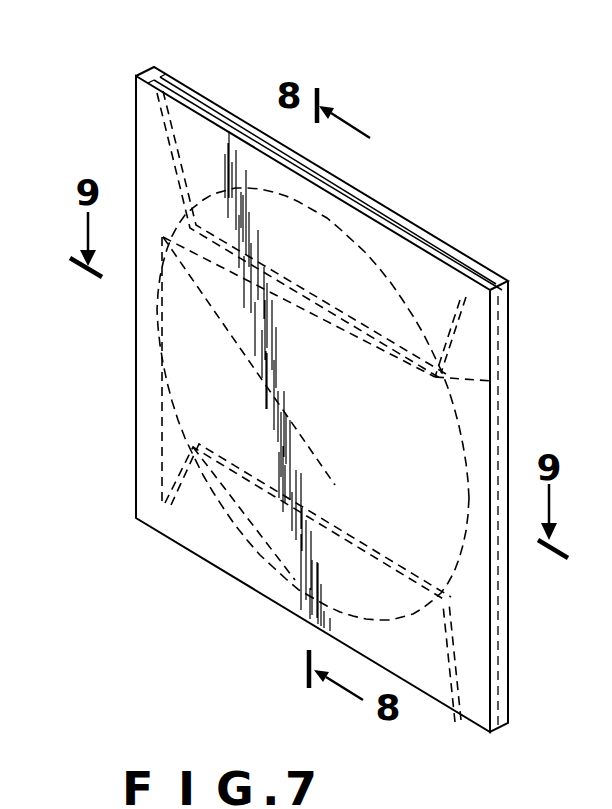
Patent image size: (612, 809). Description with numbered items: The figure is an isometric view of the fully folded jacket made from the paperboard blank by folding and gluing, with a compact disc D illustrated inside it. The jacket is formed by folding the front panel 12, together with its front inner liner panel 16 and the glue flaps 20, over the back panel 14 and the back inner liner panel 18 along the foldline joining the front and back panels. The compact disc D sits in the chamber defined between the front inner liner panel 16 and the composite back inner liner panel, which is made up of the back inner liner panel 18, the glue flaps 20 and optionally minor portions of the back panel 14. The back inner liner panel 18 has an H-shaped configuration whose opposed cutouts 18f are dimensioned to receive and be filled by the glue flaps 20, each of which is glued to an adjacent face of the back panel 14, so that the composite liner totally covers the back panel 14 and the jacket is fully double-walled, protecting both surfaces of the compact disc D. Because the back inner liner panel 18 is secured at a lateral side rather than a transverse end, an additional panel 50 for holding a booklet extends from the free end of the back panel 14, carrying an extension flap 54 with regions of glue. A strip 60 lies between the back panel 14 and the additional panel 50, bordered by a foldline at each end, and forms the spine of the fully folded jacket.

The front panel 12 is at (260, 395).
The front inner liner panel 16 is at (140, 74).
The back panel 14 is at (190, 76).
The back inner liner panel 18 is at (168, 72).
The cutouts 18f is at (510, 300).
The glue flaps 20 is at (207, 100).
The additional panel 50 is at (424, 453).
The extension flap 54 is at (185, 374).
The strip 60 is at (507, 662).
The compact disc D is at (492, 380).